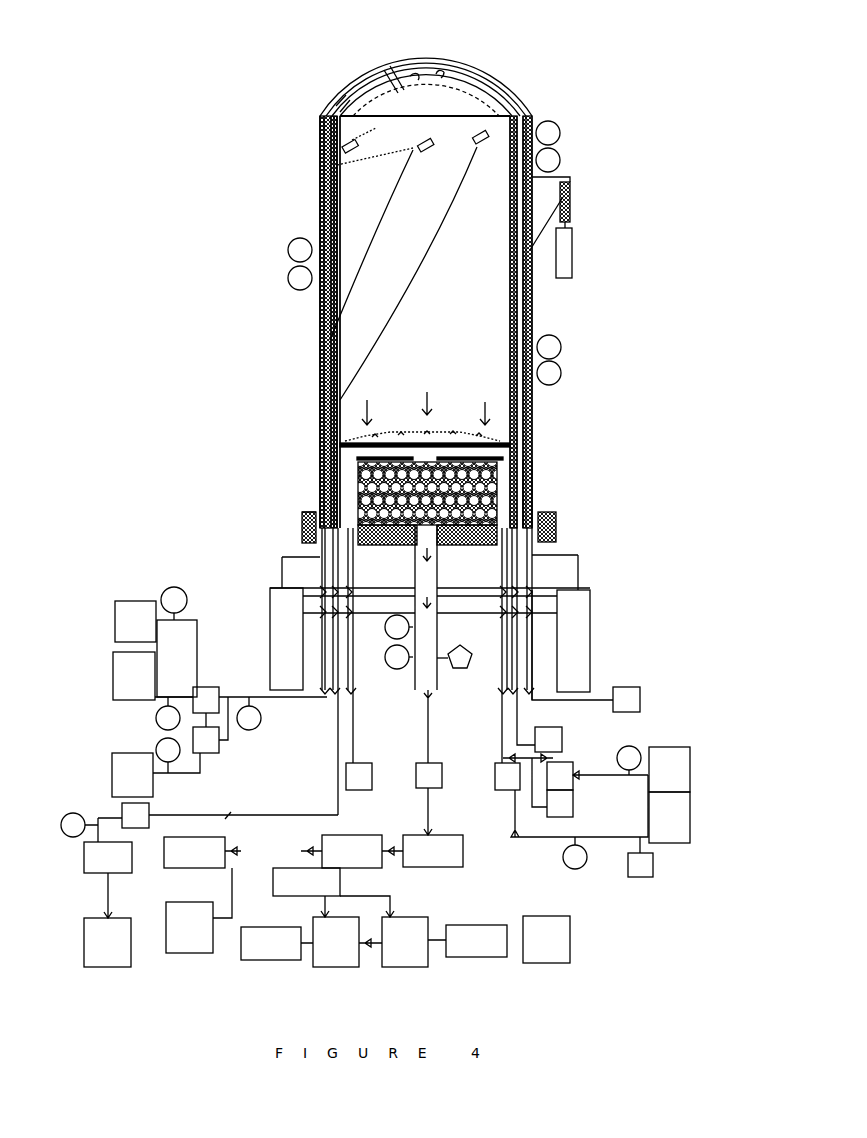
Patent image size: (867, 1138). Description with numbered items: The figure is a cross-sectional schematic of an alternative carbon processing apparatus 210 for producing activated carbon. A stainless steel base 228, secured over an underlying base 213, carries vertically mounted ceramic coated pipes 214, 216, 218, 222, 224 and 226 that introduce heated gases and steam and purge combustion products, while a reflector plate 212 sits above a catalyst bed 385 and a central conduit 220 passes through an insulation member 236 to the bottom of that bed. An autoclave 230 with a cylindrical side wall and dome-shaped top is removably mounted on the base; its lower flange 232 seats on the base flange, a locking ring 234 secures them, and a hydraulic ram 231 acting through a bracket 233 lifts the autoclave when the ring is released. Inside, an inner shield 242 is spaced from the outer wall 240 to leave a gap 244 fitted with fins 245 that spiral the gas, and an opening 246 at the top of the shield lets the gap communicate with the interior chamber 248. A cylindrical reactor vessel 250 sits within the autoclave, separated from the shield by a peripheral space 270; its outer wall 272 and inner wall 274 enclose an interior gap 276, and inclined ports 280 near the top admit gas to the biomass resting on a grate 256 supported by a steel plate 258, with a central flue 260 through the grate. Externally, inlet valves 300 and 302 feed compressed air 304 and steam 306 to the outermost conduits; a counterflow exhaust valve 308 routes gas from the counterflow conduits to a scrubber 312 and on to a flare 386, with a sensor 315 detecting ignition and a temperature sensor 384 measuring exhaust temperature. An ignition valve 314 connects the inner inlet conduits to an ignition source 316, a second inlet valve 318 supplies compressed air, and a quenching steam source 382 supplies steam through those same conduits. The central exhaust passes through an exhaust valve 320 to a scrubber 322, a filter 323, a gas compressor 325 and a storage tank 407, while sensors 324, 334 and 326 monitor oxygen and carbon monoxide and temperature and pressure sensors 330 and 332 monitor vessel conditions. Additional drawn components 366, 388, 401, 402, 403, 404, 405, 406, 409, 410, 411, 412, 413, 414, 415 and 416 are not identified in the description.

The carbon processing apparatus 210 is at (382, 35).
The reflector plate 212 is at (335, 433).
The underlying base 213 is at (282, 605).
The inlet conduit 214 is at (540, 628).
The counterflow conduit 216 is at (545, 645).
The inlet conduit 218 is at (540, 662).
The central exhaust conduit 220 is at (430, 588).
The inlet conduit 222 is at (350, 658).
The counterflow conduit 224 is at (338, 633).
The inlet conduit 226 is at (325, 620).
The stainless steel base 228 is at (272, 557).
The autoclave 230 is at (447, 60).
The hydraulic ram 231 is at (568, 258).
The lower flange 232 is at (298, 528).
The bracket 233 is at (570, 182).
The locking ring 234 is at (298, 510).
The insulation member 236 is at (320, 470).
The outer wall 240 is at (318, 398).
The inner shield 242 is at (318, 368).
The gap 244 is at (318, 360).
The fins 245 is at (320, 342).
The upper opening 246 is at (380, 70).
The interior chamber 248 is at (447, 92).
The reactor vessel 250 is at (368, 328).
The grate 256 is at (455, 433).
The steel plate 258 is at (360, 437).
The central flue 260 is at (440, 427).
The peripheral space 270 is at (322, 115).
The outer wall 272 is at (318, 195).
The inner wall 274 is at (330, 150).
The interior gap 276 is at (325, 137).
The inclined ports 280 is at (337, 165).
The inlet valve 300 is at (220, 740).
The inlet valve 302 is at (210, 702).
The compressed air source 304 is at (138, 678).
The steam source 306 is at (135, 775).
The counterflow exhaust valve 308 is at (132, 812).
The scrubber 312 is at (100, 858).
The ignition valve 314 is at (360, 778).
The sensor 315 is at (68, 816).
The ignition source 316 is at (645, 864).
The second inlet valve 318 is at (560, 765).
The exhaust valve 320 is at (450, 808).
The scrubber 322 is at (440, 852).
The filter 323 is at (352, 855).
The oxygen sensor 324 is at (397, 669).
The gas compressor 325 is at (288, 872).
The carbon monoxide sensor 326 is at (466, 670).
The temperature sensor 330 is at (292, 240).
The pressure sensor 332 is at (292, 272).
The CO/O2 sensor 334 is at (395, 640).
The controller 366 is at (190, 920).
The quenching steam source 382 is at (668, 820).
The temperature sensor 384 is at (668, 768).
The catalyst bed 385 is at (356, 459).
The flare 386 is at (105, 930).
The controller 388 is at (540, 940).
The heater 401 is at (318, 410).
The sensor 402 is at (262, 718).
The sensor 403 is at (160, 718).
The sensor 404 is at (160, 750).
The sensor 405 is at (170, 590).
The supply unit 406 is at (140, 620).
The storage tank 407 is at (182, 850).
The sensor 409 is at (634, 752).
The sensor 410 is at (577, 868).
The conduit 411 is at (490, 957).
The processing unit 412 is at (397, 960).
The processing unit 413 is at (477, 950).
The processing unit 414 is at (340, 955).
The liner 415 is at (535, 502).
The liner 416 is at (538, 493).